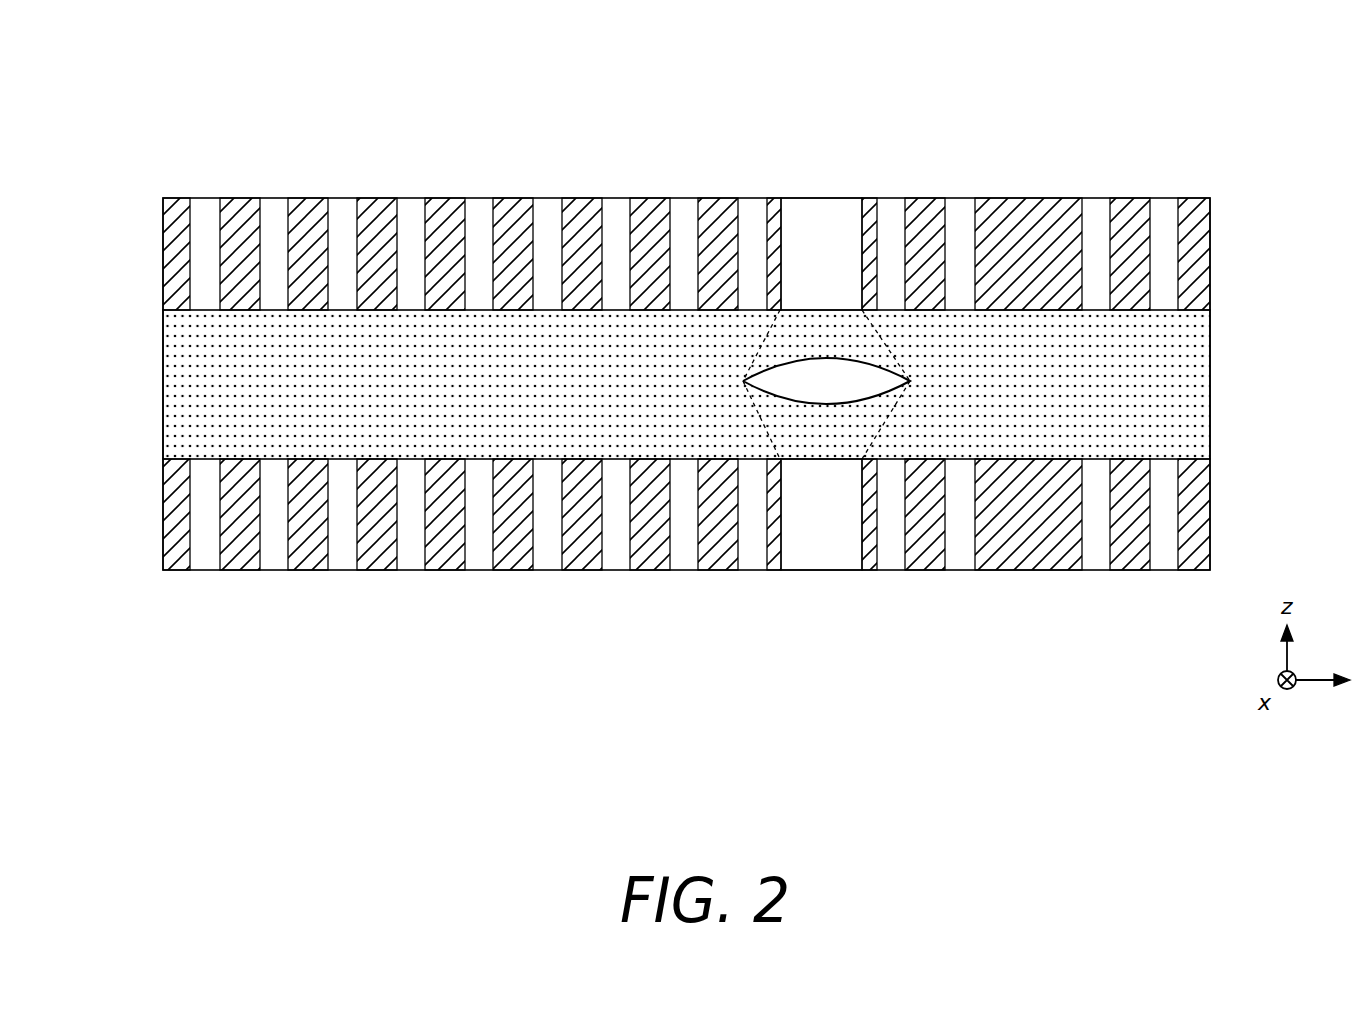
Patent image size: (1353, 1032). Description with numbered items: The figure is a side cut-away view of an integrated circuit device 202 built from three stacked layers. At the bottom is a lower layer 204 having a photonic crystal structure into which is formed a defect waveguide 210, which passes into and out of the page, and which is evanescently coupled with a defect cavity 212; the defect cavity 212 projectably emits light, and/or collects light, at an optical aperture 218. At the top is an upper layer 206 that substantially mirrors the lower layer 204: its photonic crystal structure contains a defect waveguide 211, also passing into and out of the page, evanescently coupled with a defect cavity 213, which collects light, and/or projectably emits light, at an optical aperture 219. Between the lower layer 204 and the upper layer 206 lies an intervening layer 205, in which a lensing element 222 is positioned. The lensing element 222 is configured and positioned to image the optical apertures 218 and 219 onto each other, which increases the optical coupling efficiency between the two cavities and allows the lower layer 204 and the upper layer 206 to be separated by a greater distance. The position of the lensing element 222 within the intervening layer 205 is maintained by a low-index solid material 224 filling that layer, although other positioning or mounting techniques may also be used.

The integrated circuit device 202 is at (335, 127).
The lower layer 204 is at (630, 570).
The intervening layer 205 is at (687, 384).
The upper layer 206 is at (630, 202).
The defect waveguide 210 is at (1027, 570).
The defect waveguide 211 is at (1026, 198).
The defect cavity 212 is at (823, 570).
The defect cavity 213 is at (817, 198).
The optical aperture 218 is at (795, 458).
The optical aperture 219 is at (795, 311).
The lensing element 222 is at (852, 399).
The low-index solid material 224 is at (1180, 380).